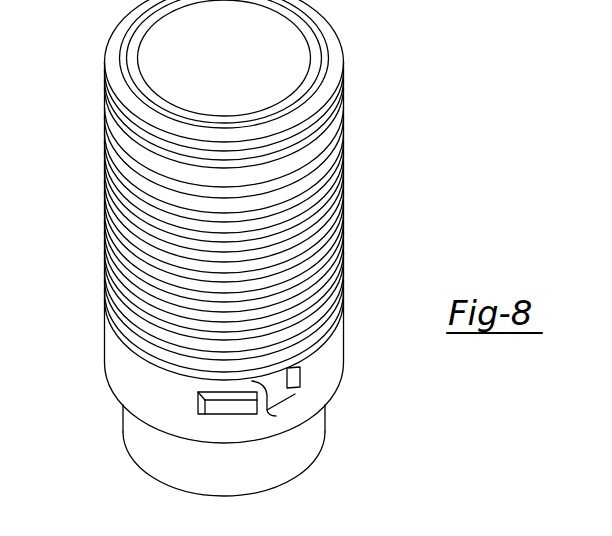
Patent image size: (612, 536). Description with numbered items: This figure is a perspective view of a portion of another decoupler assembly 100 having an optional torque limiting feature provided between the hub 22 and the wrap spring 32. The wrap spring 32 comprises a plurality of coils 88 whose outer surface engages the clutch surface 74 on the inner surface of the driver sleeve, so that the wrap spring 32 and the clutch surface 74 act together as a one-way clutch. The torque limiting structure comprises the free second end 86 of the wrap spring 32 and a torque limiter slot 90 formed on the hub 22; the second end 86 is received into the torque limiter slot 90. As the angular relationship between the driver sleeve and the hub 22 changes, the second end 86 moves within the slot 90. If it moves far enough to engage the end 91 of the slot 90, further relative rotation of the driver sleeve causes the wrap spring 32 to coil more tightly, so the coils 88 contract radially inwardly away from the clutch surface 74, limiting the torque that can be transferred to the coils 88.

The cap assembly 100 is at (546, 535).
The clutch surface 74 is at (121, 131).
The wrap spring 32 is at (111, 248).
The coils 88 is at (328, 222).
The hub 22 is at (116, 365).
The second end 86 is at (257, 405).
The torque limiter slot 90 is at (280, 395).
The end of the slot 91 is at (299, 388).